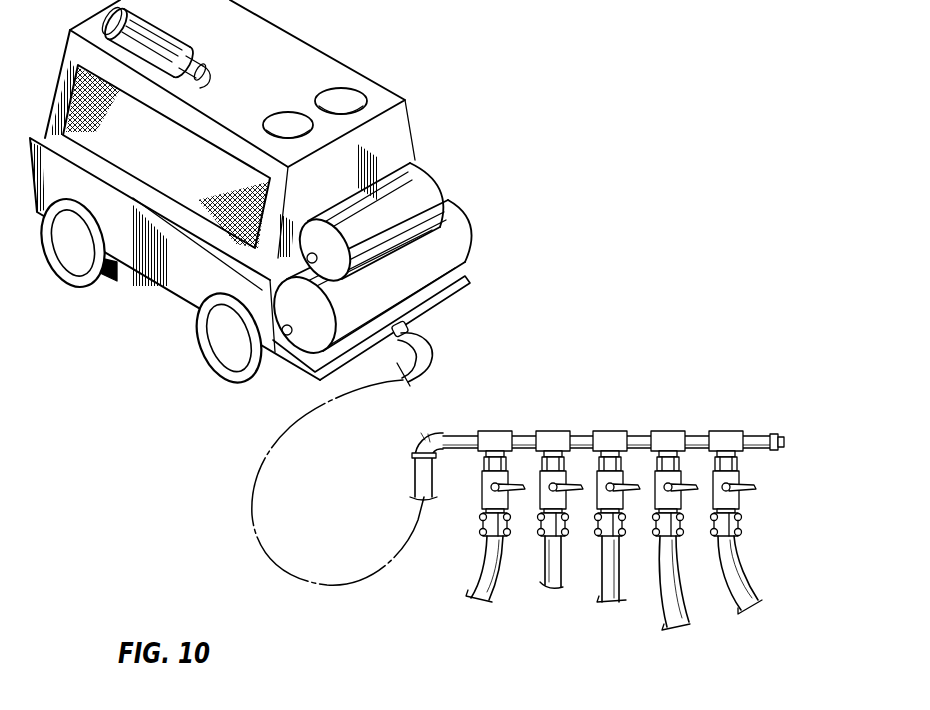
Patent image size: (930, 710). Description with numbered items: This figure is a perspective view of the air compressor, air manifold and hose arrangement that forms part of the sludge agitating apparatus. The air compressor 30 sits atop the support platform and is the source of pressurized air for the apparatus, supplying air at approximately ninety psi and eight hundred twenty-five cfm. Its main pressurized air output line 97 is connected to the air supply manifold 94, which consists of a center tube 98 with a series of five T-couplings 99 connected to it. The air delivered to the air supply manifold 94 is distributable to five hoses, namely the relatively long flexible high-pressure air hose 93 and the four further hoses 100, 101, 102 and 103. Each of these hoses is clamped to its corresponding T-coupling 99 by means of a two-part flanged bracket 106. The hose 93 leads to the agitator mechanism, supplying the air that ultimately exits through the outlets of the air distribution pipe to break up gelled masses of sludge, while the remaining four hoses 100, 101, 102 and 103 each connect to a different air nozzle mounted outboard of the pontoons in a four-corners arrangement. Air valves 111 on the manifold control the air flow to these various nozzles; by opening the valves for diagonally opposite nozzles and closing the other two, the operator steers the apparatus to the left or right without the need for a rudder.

The air compressor 30 is at (356, 40).
The flexible high-pressure air hose 93 is at (481, 578).
The air supply manifold 94 is at (625, 483).
The main pressurized air output line 97 is at (420, 343).
The center tube 98 is at (527, 436).
The T-coupling 99 is at (497, 437).
The air hose 100 is at (548, 575).
The air hose 101 is at (602, 583).
The air hose 102 is at (677, 597).
The air hose 103 is at (733, 570).
The two-part flanged bracket 106 is at (482, 520).
The air valve 111 is at (570, 486).